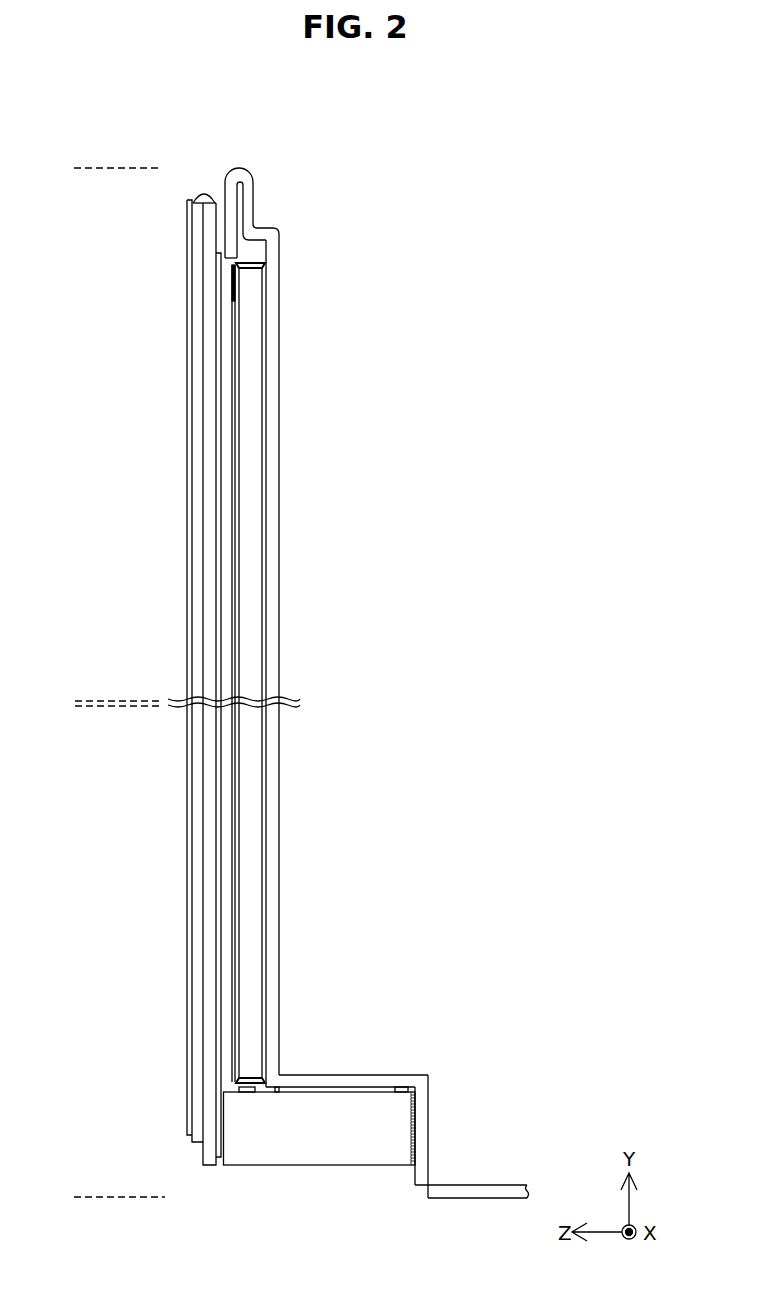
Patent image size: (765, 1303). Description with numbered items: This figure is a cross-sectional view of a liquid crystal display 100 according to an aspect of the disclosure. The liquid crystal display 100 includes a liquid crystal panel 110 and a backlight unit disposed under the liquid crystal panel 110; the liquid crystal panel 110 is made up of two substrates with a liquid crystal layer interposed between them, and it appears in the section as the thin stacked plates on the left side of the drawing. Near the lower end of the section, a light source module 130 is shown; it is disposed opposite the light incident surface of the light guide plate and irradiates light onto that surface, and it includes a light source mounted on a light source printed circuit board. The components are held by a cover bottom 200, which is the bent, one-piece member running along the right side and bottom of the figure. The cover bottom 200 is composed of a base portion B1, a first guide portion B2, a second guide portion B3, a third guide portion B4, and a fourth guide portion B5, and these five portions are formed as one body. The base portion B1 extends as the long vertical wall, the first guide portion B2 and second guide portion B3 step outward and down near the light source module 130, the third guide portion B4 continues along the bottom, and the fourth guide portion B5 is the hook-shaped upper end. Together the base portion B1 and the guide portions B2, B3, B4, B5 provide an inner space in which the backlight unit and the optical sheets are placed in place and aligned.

The liquid crystal display 100 is at (95, 131).
The liquid crystal panel 110 is at (187, 1075).
The light source module 130 is at (297, 1148).
The cover bottom 200 is at (409, 683).
The base portion B1 is at (280, 759).
The first guide portion B2 is at (353, 1075).
The second guide portion B3 is at (428, 1113).
The third guide portion B4 is at (477, 1185).
The fourth guide portion B5 is at (262, 229).